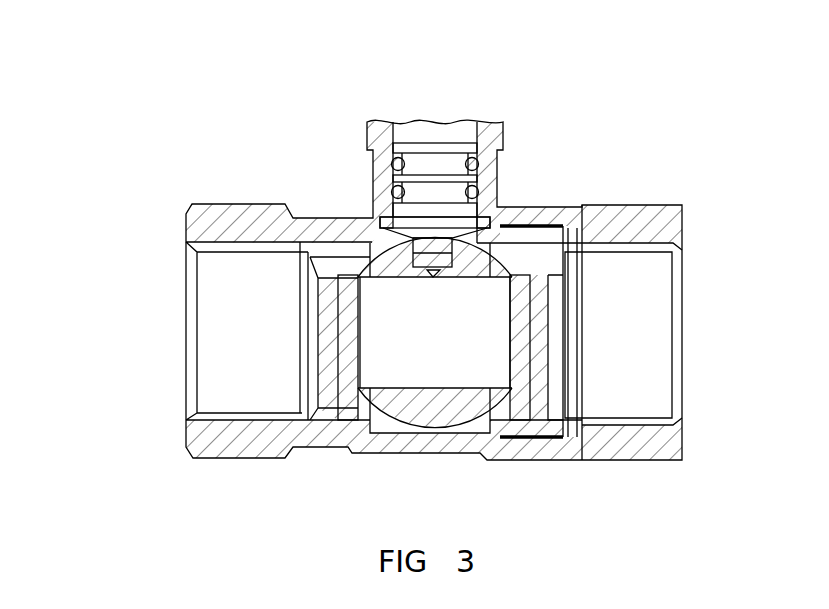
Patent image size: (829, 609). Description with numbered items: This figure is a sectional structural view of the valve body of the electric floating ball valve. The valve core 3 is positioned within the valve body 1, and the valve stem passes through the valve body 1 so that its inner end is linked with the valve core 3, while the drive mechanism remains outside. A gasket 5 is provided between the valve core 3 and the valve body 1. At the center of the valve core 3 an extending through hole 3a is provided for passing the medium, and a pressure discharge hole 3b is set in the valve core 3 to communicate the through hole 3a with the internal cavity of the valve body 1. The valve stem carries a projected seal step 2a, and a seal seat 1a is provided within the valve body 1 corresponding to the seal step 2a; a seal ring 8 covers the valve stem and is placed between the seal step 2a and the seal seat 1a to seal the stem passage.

The valve body 1 is at (262, 235).
The seal seat 1a is at (393, 215).
The valve core 3 is at (385, 268).
The seal ring 8 is at (495, 205).
The seal step 2a is at (535, 227).
The through hole 3a is at (390, 313).
The gasket 5 is at (352, 405).
The pressure discharge hole 3b is at (437, 280).